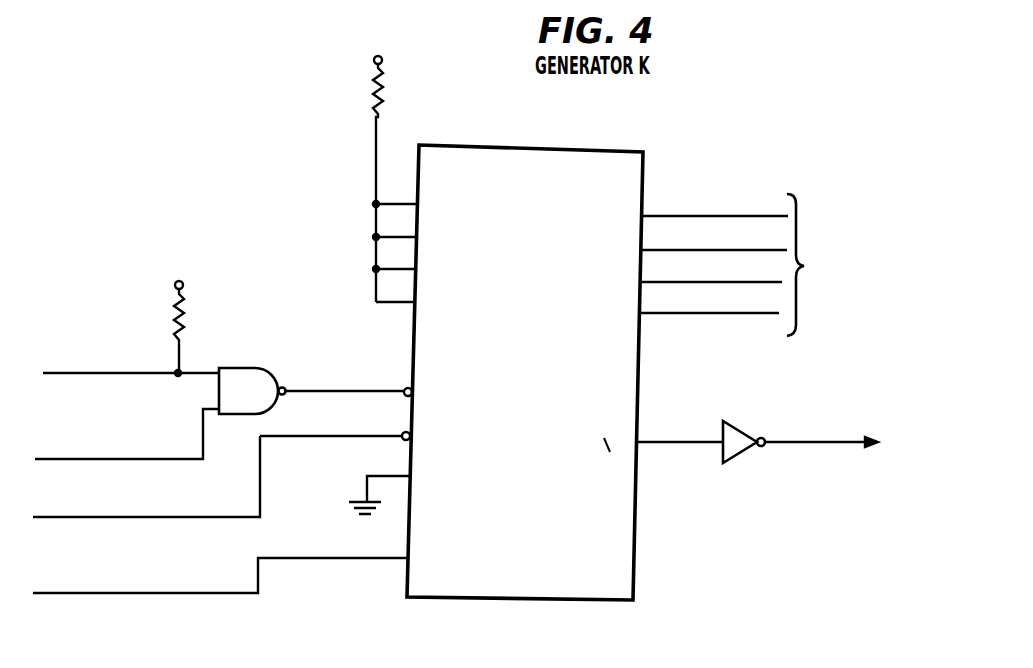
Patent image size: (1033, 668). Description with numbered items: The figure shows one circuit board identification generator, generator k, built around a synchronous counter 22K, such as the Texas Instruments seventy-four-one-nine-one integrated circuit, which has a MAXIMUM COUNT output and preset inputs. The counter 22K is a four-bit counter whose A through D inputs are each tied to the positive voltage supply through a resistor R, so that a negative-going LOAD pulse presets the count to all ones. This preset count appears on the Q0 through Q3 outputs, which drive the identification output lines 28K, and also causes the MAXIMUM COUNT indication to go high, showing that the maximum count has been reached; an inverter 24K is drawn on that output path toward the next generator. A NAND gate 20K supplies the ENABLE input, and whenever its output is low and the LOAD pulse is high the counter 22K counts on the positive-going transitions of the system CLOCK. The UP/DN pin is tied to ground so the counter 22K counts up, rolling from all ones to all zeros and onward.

The NAND gate 20K is at (269, 368).
The synchronous counter 22K is at (613, 148).
The inverter 24K is at (721, 454).
The identification output lines 28K is at (764, 265).
The resistor R is at (369, 92).